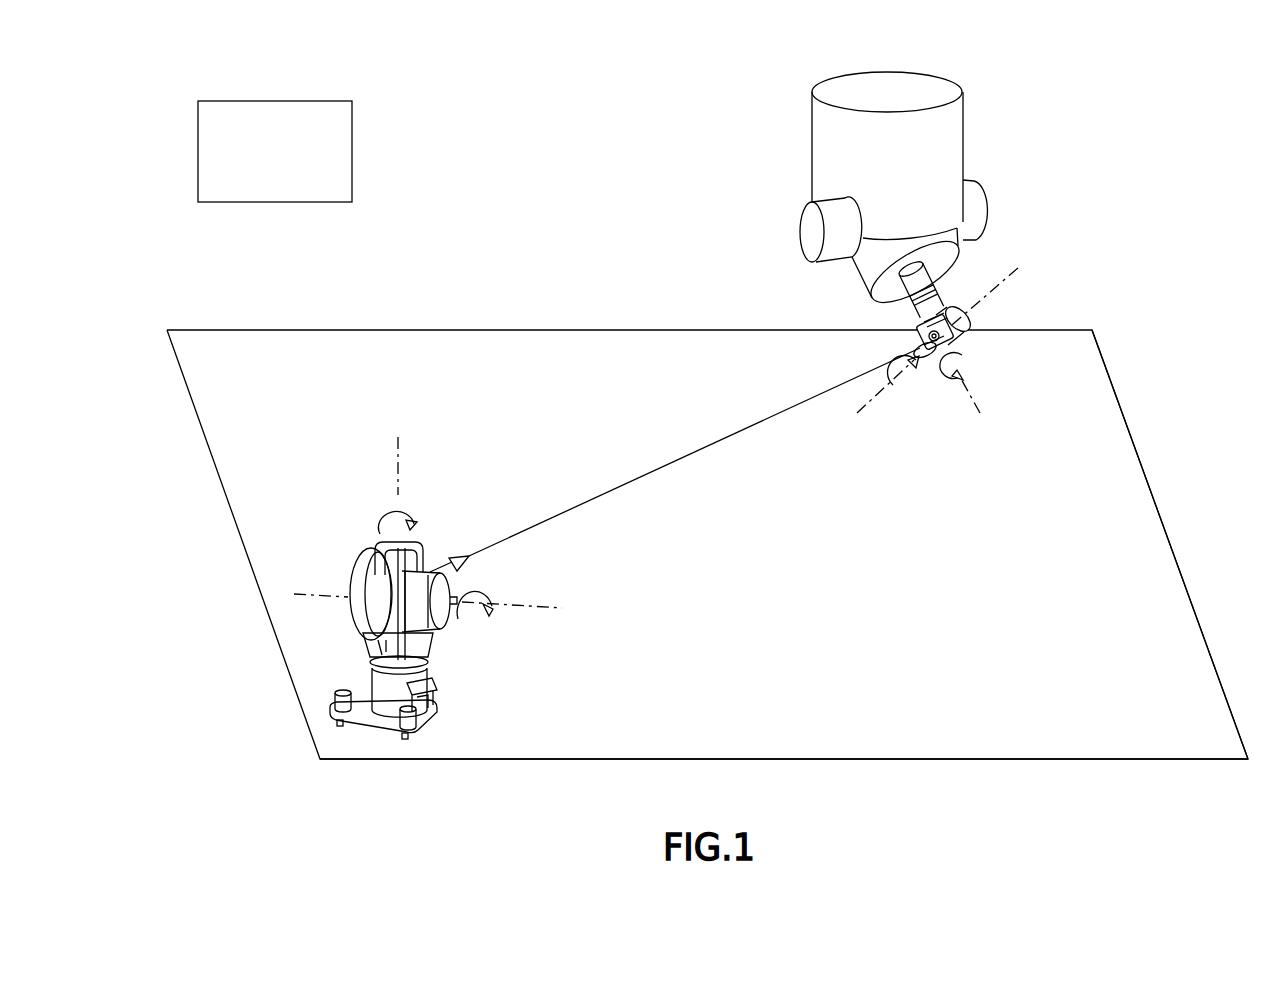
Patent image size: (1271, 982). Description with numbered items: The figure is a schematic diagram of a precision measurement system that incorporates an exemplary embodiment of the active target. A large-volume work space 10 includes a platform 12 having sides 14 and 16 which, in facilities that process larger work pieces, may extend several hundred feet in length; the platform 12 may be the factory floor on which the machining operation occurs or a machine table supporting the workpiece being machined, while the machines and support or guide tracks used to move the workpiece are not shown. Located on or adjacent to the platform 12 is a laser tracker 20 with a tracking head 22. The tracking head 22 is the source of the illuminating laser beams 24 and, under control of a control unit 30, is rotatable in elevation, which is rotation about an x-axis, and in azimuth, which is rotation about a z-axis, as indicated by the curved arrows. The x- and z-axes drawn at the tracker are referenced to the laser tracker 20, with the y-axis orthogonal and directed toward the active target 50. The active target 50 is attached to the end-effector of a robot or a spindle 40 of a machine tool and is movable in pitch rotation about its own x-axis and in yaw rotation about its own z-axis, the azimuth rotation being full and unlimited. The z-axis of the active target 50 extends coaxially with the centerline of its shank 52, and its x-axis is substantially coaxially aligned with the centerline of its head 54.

The large-volume work space 10 is at (583, 226).
The platform 12 is at (878, 628).
The side 14 is at (892, 760).
The side 16 is at (1168, 538).
The laser tracker 20 is at (402, 571).
The tracking head 22 is at (356, 581).
The illuminating laser beams 24 is at (585, 503).
The control unit 30 is at (288, 165).
The spindle 40 is at (928, 73).
The active target 50 is at (974, 334).
The shank 52 is at (936, 297).
The head 54 is at (942, 357).